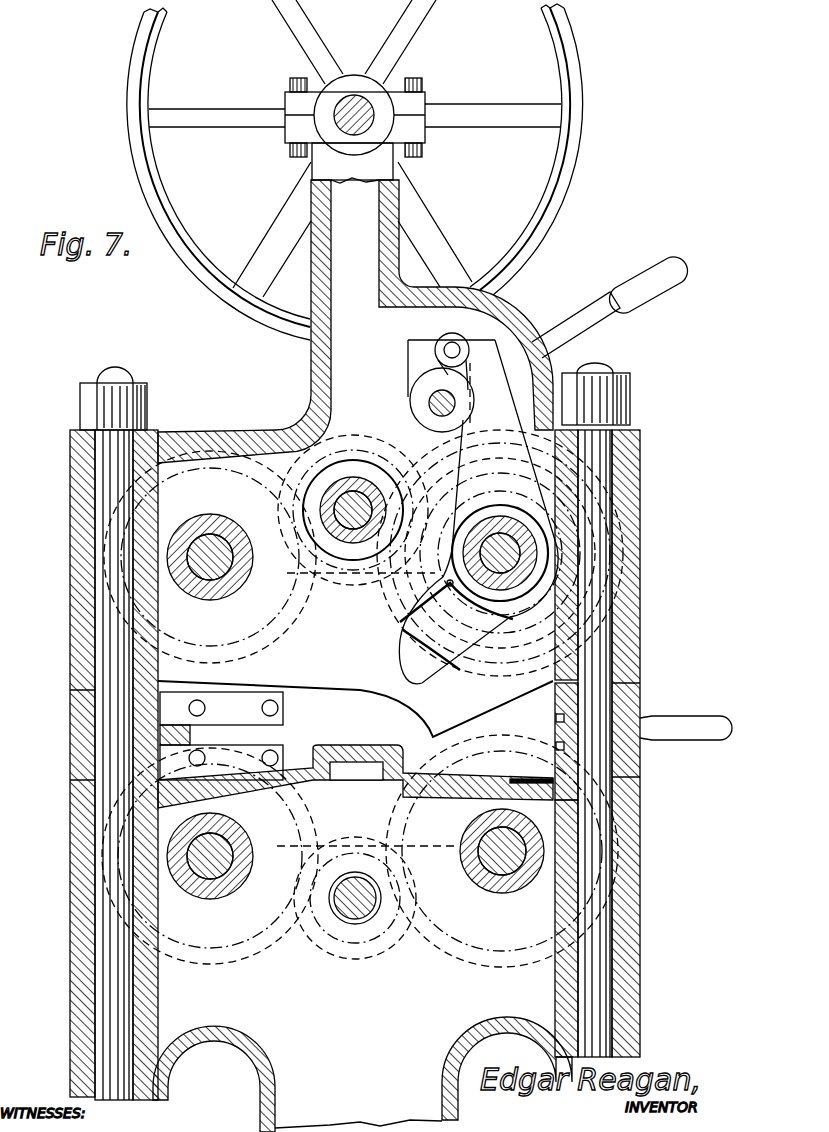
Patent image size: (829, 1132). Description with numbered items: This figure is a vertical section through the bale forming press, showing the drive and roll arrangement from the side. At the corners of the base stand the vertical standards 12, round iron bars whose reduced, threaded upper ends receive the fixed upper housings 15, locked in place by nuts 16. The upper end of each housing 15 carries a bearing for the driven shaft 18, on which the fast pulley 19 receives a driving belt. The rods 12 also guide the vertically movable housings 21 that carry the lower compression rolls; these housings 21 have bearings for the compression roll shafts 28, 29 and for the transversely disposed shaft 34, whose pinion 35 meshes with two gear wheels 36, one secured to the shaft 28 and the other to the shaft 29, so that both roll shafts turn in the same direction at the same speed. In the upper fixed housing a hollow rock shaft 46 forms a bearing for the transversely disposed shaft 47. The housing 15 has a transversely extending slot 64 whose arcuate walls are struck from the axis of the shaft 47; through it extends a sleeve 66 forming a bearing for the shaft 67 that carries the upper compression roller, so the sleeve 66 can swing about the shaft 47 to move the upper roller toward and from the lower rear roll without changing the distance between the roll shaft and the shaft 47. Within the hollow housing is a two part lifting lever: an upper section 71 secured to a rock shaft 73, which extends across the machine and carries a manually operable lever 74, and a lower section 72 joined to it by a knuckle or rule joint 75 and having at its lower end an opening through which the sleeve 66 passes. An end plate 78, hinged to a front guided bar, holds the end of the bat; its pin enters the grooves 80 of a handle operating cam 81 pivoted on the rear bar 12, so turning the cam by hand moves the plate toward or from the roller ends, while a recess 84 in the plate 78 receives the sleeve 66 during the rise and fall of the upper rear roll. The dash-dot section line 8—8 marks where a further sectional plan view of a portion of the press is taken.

The section line 8 is at (290, 492).
The vertical standards 12 is at (112, 995).
The housings 15 is at (333, 353).
The nuts 16 is at (92, 410).
The driven shaft 18 is at (342, 128).
The fast pulley 19 is at (545, 210).
The vertically movable housings 21 is at (362, 1074).
The compression roll shaft 28 is at (218, 880).
The compression roll shaft 29 is at (503, 870).
The transversely disposed shaft 34 is at (347, 913).
The pinion 35 is at (390, 946).
The gear wheels 36 is at (243, 955).
The hollow rock shaft 46 is at (358, 547).
The transversely disposed shaft 47 is at (353, 503).
The slots 64 is at (450, 580).
The sleeves 66 is at (525, 532).
The shaft 67 is at (492, 537).
The upper section of lifting lever 71 is at (410, 370).
The lower section of lifting lever 72 is at (500, 478).
The rock shaft 73 is at (440, 408).
The manually operable lever 74 is at (568, 318).
The knuckle or rule joint 75 is at (452, 342).
The end plates 78 is at (249, 736).
The grooves 80 is at (555, 732).
The handle operating cam 81 is at (660, 727).
The recess 84 is at (403, 645).